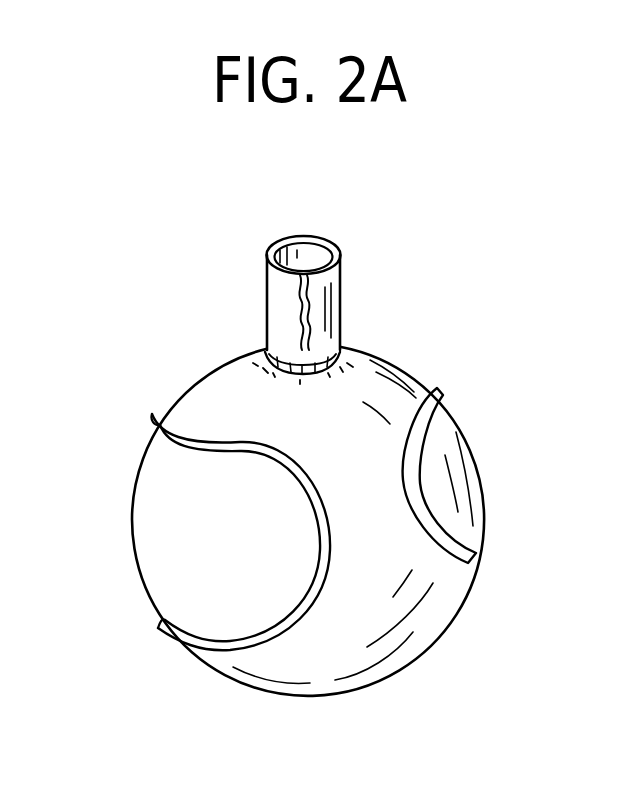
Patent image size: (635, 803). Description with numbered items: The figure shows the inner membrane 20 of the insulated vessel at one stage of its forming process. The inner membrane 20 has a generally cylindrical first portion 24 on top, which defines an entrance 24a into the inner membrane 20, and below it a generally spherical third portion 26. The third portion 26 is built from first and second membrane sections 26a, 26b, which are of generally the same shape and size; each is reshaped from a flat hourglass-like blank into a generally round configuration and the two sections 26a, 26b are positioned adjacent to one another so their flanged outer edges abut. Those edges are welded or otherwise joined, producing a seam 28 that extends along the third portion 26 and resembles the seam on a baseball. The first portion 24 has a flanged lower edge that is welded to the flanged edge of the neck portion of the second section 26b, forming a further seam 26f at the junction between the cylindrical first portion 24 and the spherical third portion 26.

The inner membrane 20 is at (397, 392).
The first portion 24 is at (332, 303).
The entrance 24a is at (313, 245).
The seam 26f is at (338, 347).
The third portion 26 is at (473, 537).
The first membrane section 26a is at (447, 497).
The second membrane section 26b is at (410, 632).
The seam 28 is at (328, 522).